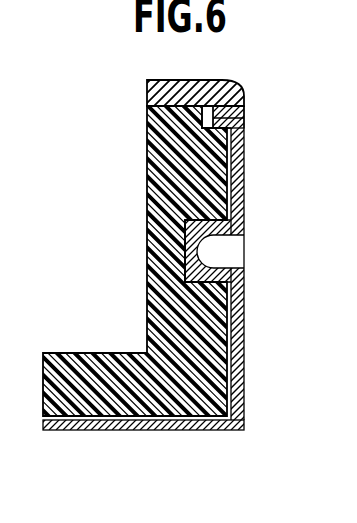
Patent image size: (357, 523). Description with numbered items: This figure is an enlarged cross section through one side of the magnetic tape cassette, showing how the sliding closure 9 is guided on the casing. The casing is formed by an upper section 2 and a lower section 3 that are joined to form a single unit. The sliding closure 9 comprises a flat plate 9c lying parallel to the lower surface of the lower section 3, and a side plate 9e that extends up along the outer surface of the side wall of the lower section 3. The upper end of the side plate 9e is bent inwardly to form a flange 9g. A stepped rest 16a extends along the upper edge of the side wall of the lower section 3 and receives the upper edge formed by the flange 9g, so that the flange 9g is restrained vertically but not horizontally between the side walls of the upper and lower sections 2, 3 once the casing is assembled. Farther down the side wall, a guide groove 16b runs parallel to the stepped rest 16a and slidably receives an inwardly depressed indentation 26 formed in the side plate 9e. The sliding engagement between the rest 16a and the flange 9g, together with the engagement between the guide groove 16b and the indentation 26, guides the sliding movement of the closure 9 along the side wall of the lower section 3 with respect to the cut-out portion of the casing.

The upper section 2 is at (147, 93).
The lower section 3 is at (148, 167).
The sliding closure 9 is at (270, 387).
The flat plate 9c is at (118, 431).
The side plate 9e is at (244, 343).
The flange 9g is at (238, 119).
The stepped rest 16a is at (207, 112).
The guide groove 16b is at (187, 276).
The inwardly depressed indentation 26 is at (200, 253).